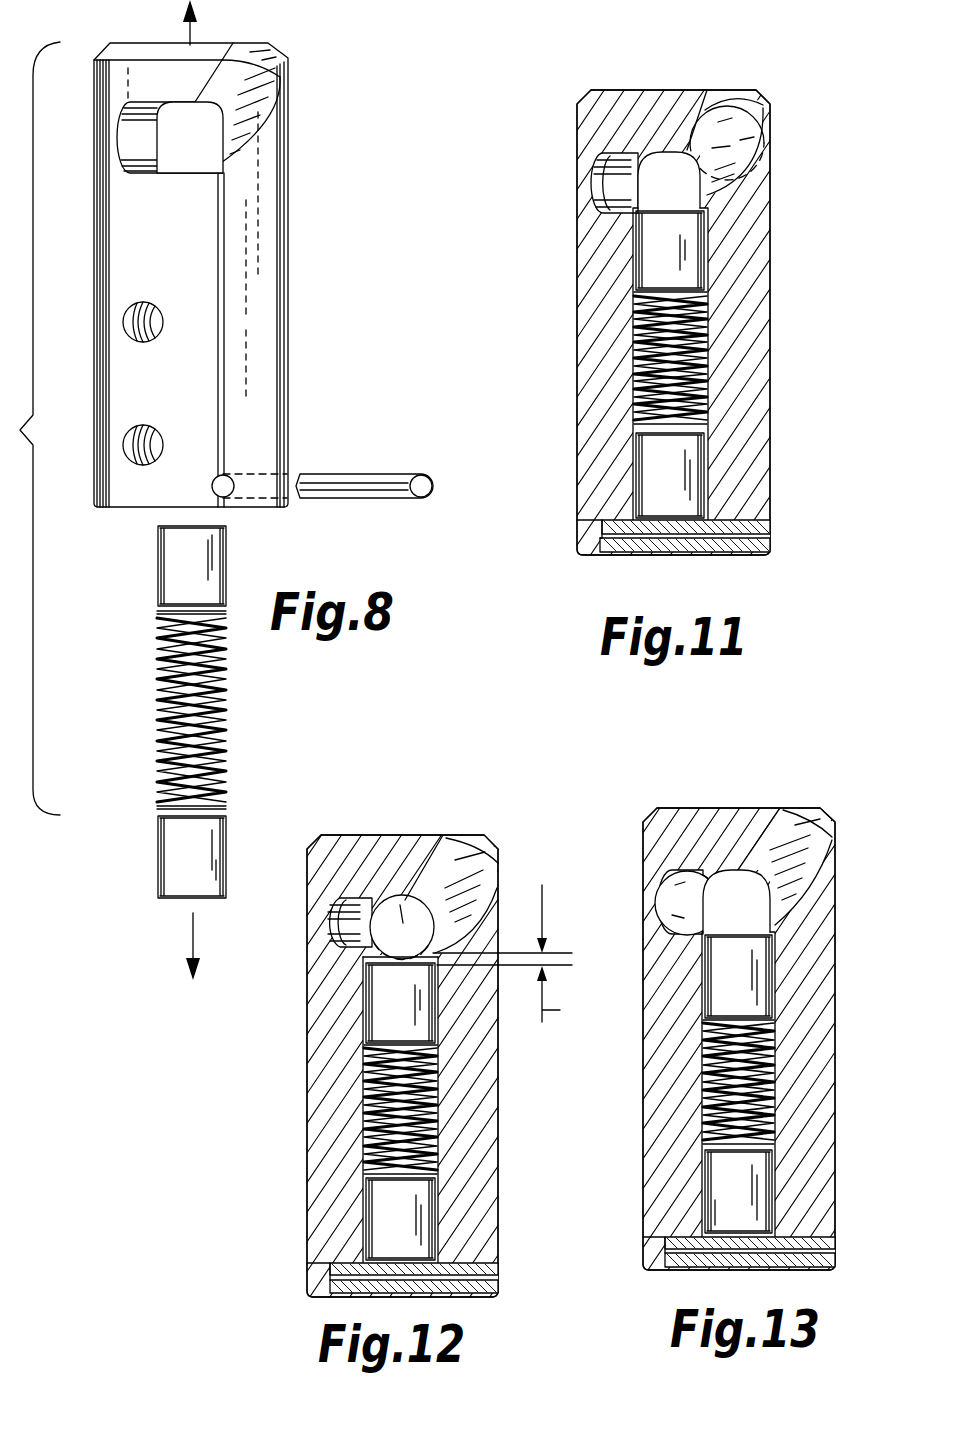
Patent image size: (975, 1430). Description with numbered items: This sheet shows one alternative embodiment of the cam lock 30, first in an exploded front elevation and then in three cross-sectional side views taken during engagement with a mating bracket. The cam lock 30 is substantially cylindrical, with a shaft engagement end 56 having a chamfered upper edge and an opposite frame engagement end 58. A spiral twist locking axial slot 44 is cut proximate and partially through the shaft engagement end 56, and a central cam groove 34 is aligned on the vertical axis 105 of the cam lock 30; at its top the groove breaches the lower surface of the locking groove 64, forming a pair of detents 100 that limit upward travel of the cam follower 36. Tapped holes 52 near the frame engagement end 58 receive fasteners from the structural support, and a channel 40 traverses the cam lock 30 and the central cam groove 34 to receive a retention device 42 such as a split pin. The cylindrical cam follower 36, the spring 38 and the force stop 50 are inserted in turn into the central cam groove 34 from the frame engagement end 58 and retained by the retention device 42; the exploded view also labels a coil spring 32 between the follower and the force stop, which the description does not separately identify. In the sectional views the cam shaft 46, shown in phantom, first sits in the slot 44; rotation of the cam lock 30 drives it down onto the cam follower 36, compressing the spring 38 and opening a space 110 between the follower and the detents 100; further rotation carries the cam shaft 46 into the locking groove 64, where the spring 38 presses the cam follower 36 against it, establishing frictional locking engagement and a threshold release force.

In FIG. 8, the cam lock 30 is at (143, 210).
In FIG. 11, the cam lock 30 is at (773, 333).
In FIG. 12, the cam lock 30 is at (340, 1108).
In FIG. 13, the cam lock 30 is at (487, 715).
In FIG. 8, the spring 32 is at (156, 652).
In FIG. 11, the central cam groove 34 is at (643, 333).
In FIG. 12, the central cam groove 34 is at (375, 1117).
In FIG. 13, the central cam groove 34 is at (770, 1102).
In FIG. 8, the cam follower 36 is at (185, 558).
In FIG. 11, the cam follower 36 is at (665, 262).
In FIG. 12, the cam follower 36 is at (400, 1005).
In FIG. 13, the cam follower 36 is at (755, 983).
In FIG. 11, the spring 38 is at (643, 382).
In FIG. 12, the spring 38 is at (375, 1145).
In FIG. 13, the spring 38 is at (795, 1070).
In FIG. 8, the channel 40 is at (232, 496).
In FIG. 11, the channel 40 is at (620, 549).
In FIG. 12, the channel 40 is at (340, 1291).
In FIG. 13, the channel 40 is at (695, 1266).
In FIG. 8, the retention device 42 is at (368, 474).
In FIG. 11, the retention device 42 is at (760, 521).
In FIG. 12, the retention device 42 is at (472, 1264).
In FIG. 13, the retention device 42 is at (803, 1238).
In FIG. 8, the spiral twist locking axial slot 44 is at (262, 95).
In FIG. 11, the spiral twist locking axial slot 44 is at (737, 188).
In FIG. 12, the spiral twist locking axial slot 44 is at (462, 878).
In FIG. 13, the spiral twist locking axial slot 44 is at (815, 829).
In FIG. 11, the cam shaft 46 is at (742, 141).
In FIG. 12, the cam shaft 46 is at (407, 895).
In FIG. 13, the cam shaft 46 is at (655, 884).
In FIG. 8, the force stop 50 is at (192, 845).
In FIG. 11, the force stop 50 is at (665, 460).
In FIG. 12, the force stop 50 is at (400, 1215).
In FIG. 13, the force stop 50 is at (755, 1184).
In FIG. 8, the tapped holes 52 is at (122, 445).
In FIG. 8, the shaft engagement end 56 is at (93, 50).
In FIG. 11, the shaft engagement end 56 is at (568, 90).
In FIG. 12, the shaft engagement end 56 is at (368, 824).
In FIG. 13, the shaft engagement end 56 is at (724, 797).
In FIG. 11, the frame engagement end 58 is at (606, 590).
In FIG. 8, the locking groove 64 is at (132, 132).
In FIG. 11, the locking groove 64 is at (613, 181).
In FIG. 12, the locking groove 64 is at (338, 926).
In FIG. 13, the locking groove 64 is at (680, 902).
In FIG. 8, the detents 100 is at (190, 137).
In FIG. 11, the detents 100 is at (620, 217).
In FIG. 12, the detents 100 is at (433, 954).
In FIG. 13, the detents 100 is at (782, 911).
In FIG. 8, the vertical axis 105 is at (195, 28).
In FIG. 12, the space 110 is at (543, 907).